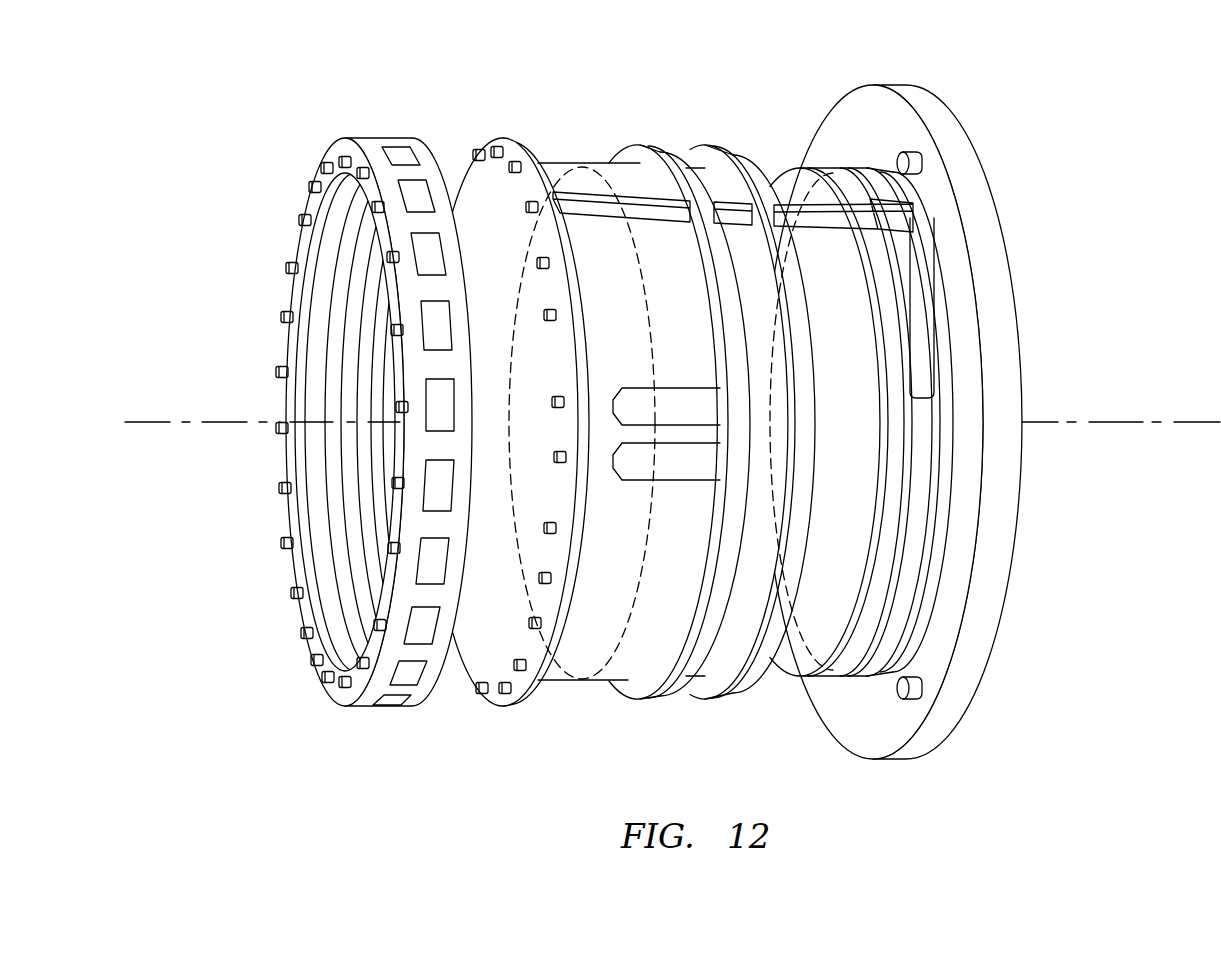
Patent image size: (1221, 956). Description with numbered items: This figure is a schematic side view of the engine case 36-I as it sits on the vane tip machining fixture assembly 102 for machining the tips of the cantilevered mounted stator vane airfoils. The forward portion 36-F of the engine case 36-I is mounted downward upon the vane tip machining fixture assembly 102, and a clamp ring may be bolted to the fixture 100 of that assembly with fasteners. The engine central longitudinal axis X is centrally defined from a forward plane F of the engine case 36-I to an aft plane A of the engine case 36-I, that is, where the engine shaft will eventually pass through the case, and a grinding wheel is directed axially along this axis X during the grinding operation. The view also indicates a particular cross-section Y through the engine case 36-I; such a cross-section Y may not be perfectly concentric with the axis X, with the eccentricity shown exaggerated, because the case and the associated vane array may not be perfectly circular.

The engine case 36-I is at (325, 397).
The vane tip machining fixture assembly 102 is at (724, 96).
The fixture 100 is at (956, 262).
The forward portion of the engine case 36-F is at (929, 387).
The forward plane F is at (303, 400).
The aft plane A is at (915, 515).
The engine central longitudinal axis X is at (1103, 425).
The cross-section Y is at (572, 135).